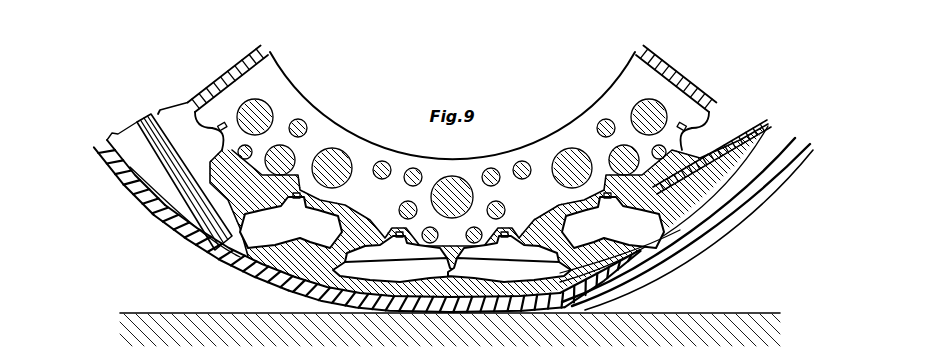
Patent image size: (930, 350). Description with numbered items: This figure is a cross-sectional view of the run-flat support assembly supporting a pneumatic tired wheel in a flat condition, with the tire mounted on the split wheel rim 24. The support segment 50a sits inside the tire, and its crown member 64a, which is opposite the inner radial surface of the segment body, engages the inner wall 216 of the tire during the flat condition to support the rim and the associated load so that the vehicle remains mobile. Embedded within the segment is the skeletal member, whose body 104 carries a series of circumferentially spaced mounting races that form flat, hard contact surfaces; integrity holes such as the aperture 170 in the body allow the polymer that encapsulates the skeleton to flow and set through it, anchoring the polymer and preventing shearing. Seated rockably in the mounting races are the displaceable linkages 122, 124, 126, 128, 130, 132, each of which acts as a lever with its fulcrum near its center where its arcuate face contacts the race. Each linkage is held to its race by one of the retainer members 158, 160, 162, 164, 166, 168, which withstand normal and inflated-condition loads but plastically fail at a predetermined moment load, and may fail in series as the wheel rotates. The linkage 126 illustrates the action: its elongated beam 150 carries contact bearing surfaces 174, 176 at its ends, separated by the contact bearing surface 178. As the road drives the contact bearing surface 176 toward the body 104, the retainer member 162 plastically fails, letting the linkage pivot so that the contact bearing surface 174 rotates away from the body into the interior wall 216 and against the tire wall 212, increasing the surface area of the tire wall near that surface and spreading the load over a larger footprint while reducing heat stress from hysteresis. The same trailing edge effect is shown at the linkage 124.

The split wheel rim 24 is at (162, 112).
The support segment 50a is at (720, 100).
The crown member 64a is at (720, 192).
The body 104 is at (282, 87).
The linkage 122 is at (749, 118).
The linkage 124 is at (662, 232).
The linkage 126 is at (598, 297).
The linkage 128 is at (323, 293).
The linkage 130 is at (233, 250).
The linkage 132 is at (145, 116).
The elongated beam 150 is at (556, 278).
The retainer member 158 is at (683, 124).
The retainer member 160 is at (590, 193).
The retainer member 162 is at (506, 232).
The retainer member 164 is at (398, 232).
The retainer member 166 is at (322, 158).
The retainer member 168 is at (222, 124).
The aperture 170 is at (652, 100).
The contact bearing surface 174 is at (620, 290).
The contact bearing surface 176 is at (460, 273).
The contact bearing surface 178 is at (505, 277).
The side wall 212 is at (160, 223).
The inner wall 216 is at (152, 185).